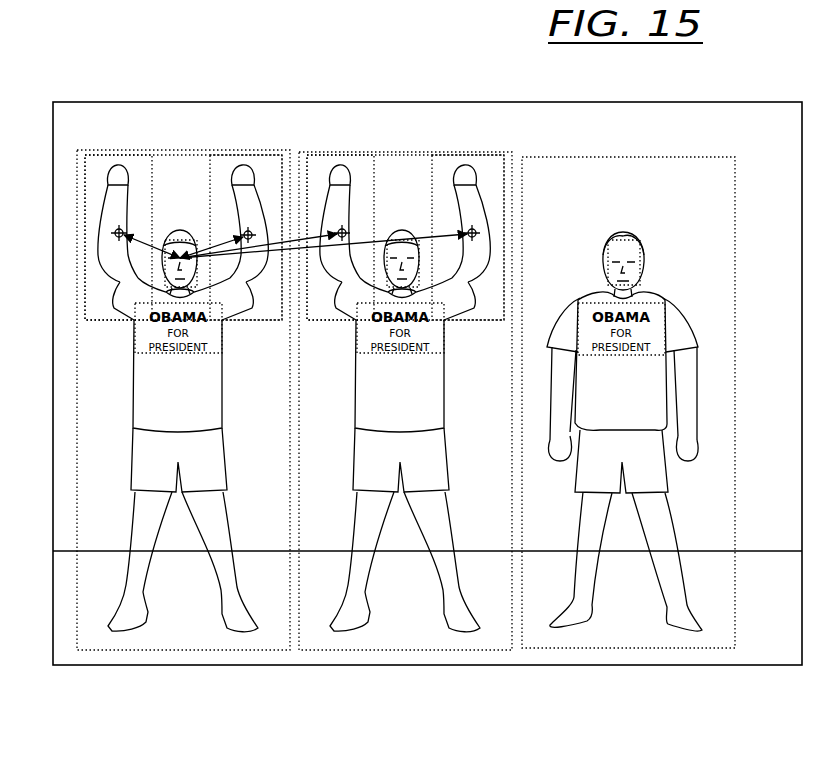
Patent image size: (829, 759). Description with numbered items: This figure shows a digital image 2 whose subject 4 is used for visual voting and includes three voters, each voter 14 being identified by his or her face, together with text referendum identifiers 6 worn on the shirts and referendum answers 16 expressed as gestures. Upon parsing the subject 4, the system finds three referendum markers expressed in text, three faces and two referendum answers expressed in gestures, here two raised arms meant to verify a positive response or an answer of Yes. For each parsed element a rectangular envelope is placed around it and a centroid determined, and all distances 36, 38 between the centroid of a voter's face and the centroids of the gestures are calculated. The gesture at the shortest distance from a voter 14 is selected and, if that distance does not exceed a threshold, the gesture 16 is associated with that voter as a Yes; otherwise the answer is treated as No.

The digital image 2 is at (53, 593).
The subject of digital image 4 is at (147, 650).
The text referendum identifier 6 is at (86, 320).
The voter 14 is at (163, 255).
The referendum answer expressed as a gesture 16 is at (112, 155).
The distance between centroid of a face and centroid of a gesture 36 is at (150, 247).
The distance between centroid of a face and centroid of a gesture 38 is at (272, 280).